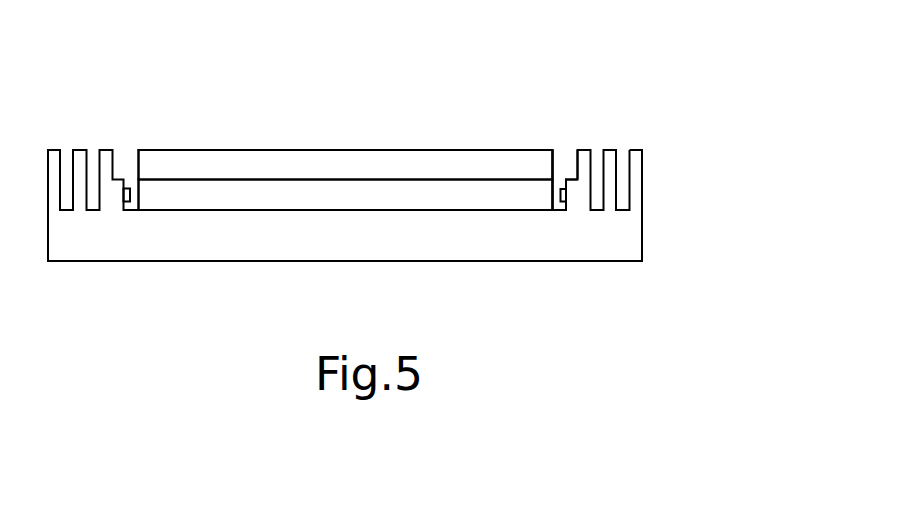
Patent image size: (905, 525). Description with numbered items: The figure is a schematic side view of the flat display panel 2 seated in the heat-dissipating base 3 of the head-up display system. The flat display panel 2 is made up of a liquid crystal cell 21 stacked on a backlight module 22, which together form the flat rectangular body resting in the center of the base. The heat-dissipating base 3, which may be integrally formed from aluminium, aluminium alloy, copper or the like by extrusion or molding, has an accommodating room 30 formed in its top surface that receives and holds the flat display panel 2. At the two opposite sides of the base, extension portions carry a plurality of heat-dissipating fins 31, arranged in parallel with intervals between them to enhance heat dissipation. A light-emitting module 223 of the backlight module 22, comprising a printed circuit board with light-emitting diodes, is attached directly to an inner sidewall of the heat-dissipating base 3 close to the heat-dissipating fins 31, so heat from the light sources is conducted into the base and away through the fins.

The flat display panel 2 is at (366, 170).
The liquid crystal cell 21 is at (330, 172).
The backlight module 22 is at (278, 188).
The light-emitting module 223 is at (561, 205).
The heat-dissipating base 3 is at (658, 120).
The accommodating room 30 is at (563, 150).
The heat-dissipating fins 31 is at (637, 182).